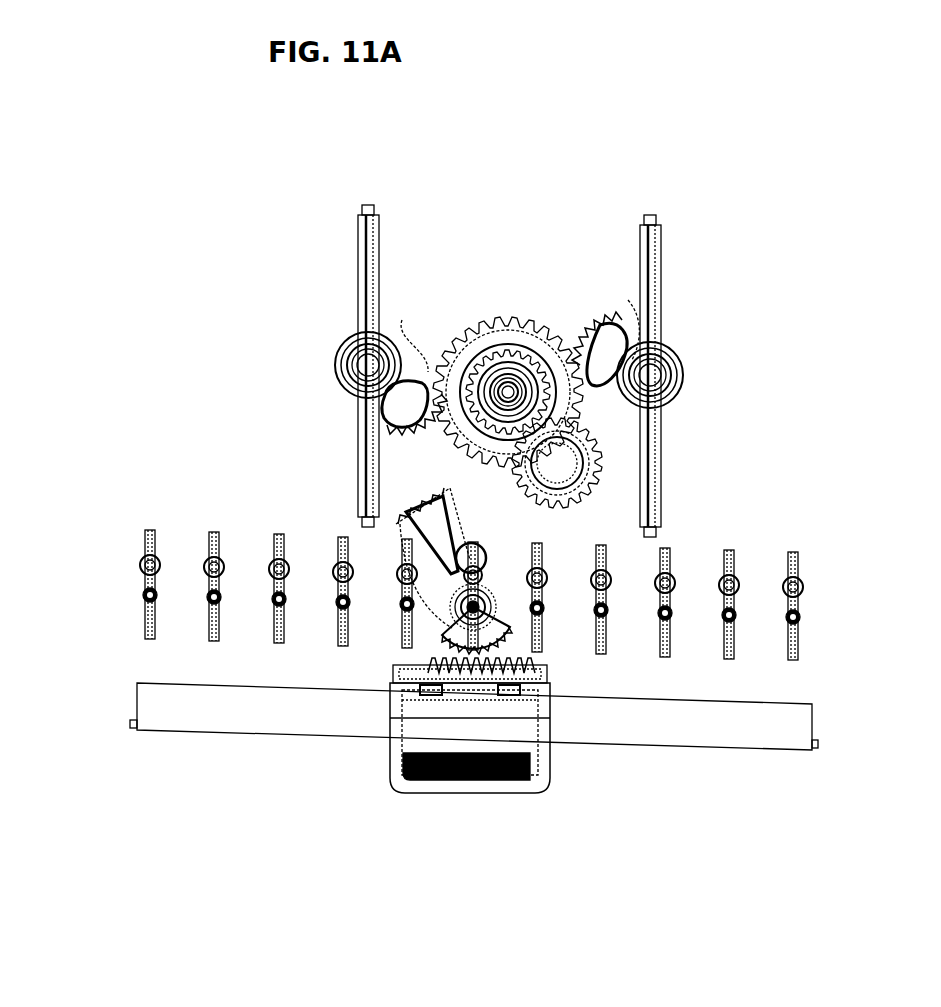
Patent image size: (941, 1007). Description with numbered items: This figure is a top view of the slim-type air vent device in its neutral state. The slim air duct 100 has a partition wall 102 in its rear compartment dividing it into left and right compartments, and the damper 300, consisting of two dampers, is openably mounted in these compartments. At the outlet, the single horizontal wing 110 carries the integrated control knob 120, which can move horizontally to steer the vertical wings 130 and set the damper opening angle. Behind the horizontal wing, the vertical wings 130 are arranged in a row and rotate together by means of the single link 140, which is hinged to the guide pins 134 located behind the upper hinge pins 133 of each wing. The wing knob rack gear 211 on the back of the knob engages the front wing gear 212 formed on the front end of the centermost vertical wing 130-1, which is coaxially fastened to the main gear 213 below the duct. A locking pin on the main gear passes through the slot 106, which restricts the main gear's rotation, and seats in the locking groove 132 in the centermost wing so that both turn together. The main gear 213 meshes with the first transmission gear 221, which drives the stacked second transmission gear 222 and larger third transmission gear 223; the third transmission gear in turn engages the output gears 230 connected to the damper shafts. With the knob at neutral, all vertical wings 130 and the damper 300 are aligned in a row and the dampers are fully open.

The slim air duct 100 is at (122, 508).
The partition wall 102 is at (512, 220).
The slot 106 is at (490, 595).
The single horizontal wing 110 is at (636, 750).
The integrated control knob 120 is at (387, 766).
The vertical wings 130 is at (145, 631).
The centermost vertical wing 130-1 is at (428, 646).
The locking groove 132 is at (482, 556).
The upper hinge pins 133 is at (800, 608).
The guide pins 134 is at (802, 582).
The single link 140 is at (762, 582).
The wing knob rack gear 211 is at (548, 672).
The front wing gear 212 is at (520, 652).
The main gear 213 is at (400, 522).
The first transmission gear 221 is at (586, 488).
The second transmission gear 222 is at (470, 345).
The third transmission gear 223 is at (528, 318).
The output gears 230 is at (420, 375).
The damper 300 is at (352, 305).